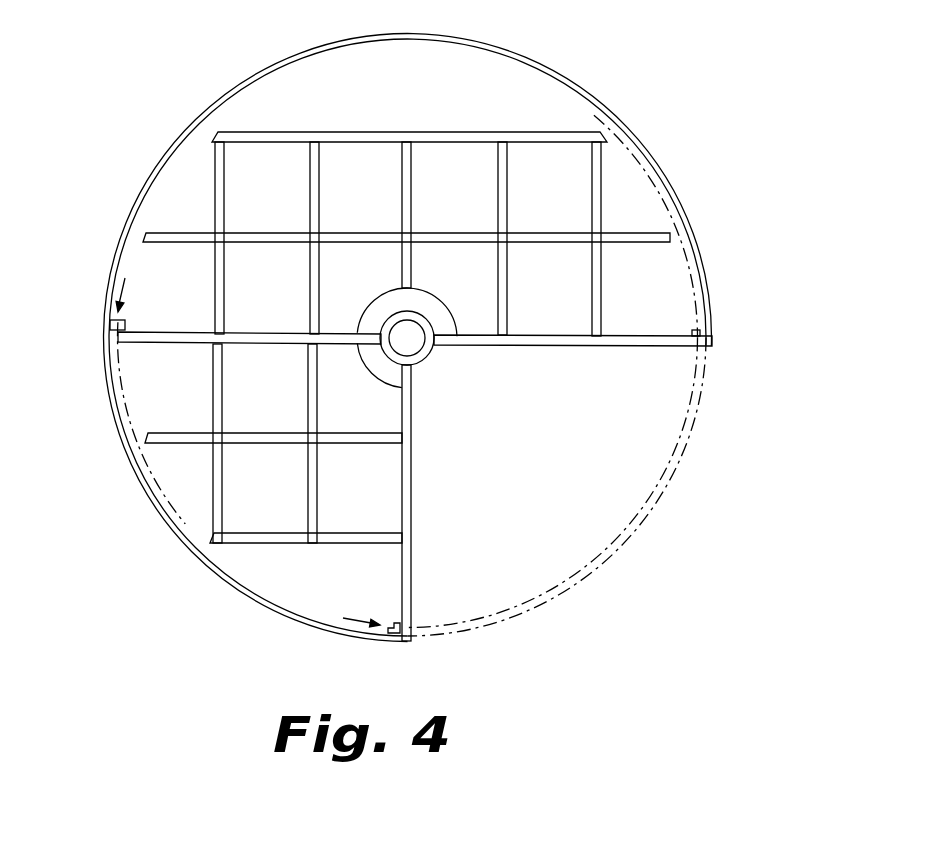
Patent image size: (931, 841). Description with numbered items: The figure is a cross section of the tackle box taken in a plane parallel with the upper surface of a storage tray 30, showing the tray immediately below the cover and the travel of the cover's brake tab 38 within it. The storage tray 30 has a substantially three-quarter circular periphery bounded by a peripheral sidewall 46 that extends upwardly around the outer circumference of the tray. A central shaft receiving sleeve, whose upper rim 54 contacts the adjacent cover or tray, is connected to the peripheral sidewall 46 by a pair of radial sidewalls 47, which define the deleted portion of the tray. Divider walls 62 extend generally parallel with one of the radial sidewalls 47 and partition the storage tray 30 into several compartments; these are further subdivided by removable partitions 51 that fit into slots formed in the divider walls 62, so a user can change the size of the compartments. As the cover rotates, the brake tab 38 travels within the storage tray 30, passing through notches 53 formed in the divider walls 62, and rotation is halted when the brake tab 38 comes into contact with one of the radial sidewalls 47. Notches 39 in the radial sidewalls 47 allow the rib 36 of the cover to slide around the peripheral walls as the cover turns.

The storage tray 30 is at (699, 89).
The peripheral sidewall 46 is at (579, 93).
The rib 36 is at (703, 278).
The radial sidewalls 47 is at (552, 347).
The upper rim 54 is at (425, 356).
The divider walls 62 is at (447, 136).
The removable partitions 51 is at (310, 195).
The brake tab 38 is at (108, 320).
The notches 39 is at (703, 366).
The notches 53 is at (231, 114).